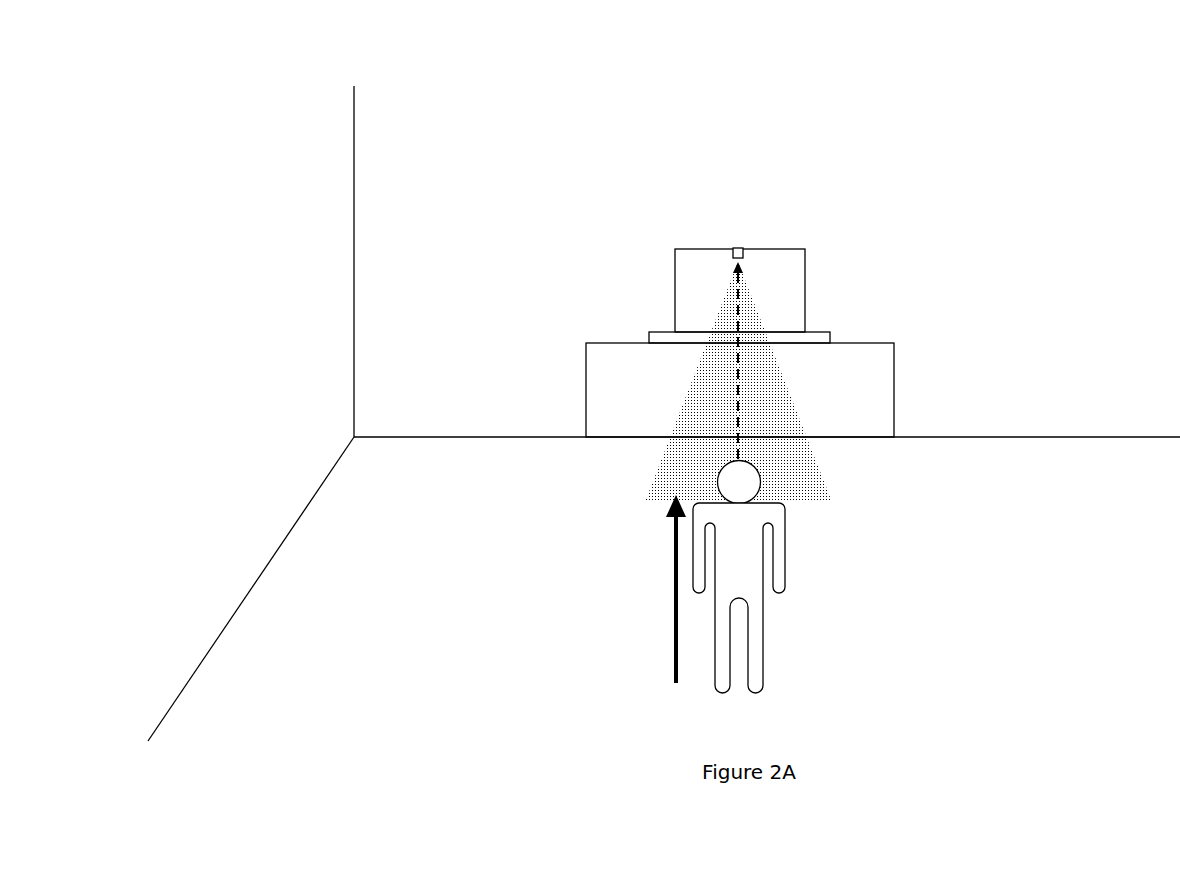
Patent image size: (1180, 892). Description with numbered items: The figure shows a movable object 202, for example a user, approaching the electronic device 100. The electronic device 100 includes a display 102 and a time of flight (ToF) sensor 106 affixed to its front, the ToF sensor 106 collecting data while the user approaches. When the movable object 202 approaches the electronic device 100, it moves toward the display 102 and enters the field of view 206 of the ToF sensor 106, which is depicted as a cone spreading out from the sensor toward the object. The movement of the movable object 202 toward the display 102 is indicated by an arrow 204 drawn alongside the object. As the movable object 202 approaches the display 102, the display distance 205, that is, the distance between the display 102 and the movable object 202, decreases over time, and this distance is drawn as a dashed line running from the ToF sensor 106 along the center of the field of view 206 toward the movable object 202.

The electronic device 100 is at (740, 316).
The display 102 is at (682, 285).
The time of flight (ToF) sensor 106 is at (738, 248).
The movable object 202 is at (765, 633).
The direction of user movement 204 is at (673, 600).
The display distance 205 is at (738, 402).
The field of view (FOV) 206 is at (675, 425).